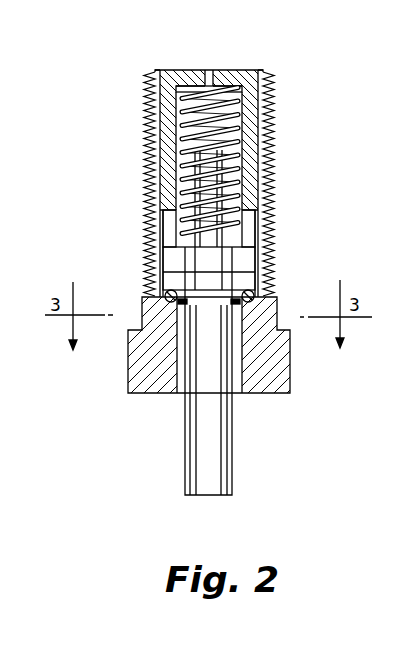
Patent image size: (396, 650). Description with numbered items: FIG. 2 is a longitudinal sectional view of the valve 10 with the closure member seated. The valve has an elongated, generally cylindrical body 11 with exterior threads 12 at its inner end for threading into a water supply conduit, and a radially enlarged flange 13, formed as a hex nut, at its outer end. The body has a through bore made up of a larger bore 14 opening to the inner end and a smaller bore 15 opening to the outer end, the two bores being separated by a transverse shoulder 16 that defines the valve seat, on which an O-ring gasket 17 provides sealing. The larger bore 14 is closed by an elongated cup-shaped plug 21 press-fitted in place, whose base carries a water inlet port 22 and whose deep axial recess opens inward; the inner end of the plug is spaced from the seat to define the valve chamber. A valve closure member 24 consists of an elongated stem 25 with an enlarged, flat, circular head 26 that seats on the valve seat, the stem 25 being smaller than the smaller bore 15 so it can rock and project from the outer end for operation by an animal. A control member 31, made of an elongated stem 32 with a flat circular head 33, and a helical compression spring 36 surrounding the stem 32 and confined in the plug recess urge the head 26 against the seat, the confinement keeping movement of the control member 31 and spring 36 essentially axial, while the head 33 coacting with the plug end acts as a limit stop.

The shock absorber assembly 10 is at (284, 161).
The valve body 11 is at (274, 199).
The exterior threads 12 is at (148, 106).
The radially enlarged flange 13 is at (144, 378).
The larger bore 14 is at (163, 235).
The smaller bore 15 is at (242, 380).
The transverse shoulder 16 is at (256, 311).
The O-ring gasket 17 is at (158, 298).
The cup-shaped plug 21 is at (240, 74).
The water inlet port 22 is at (210, 70).
The valve closure member 24 is at (183, 459).
The stem 25 is at (214, 450).
The head 26 is at (231, 277).
The control member 31 is at (254, 241).
The stem 32 is at (184, 163).
The head 33 is at (180, 259).
The helical compression spring 36 is at (241, 112).